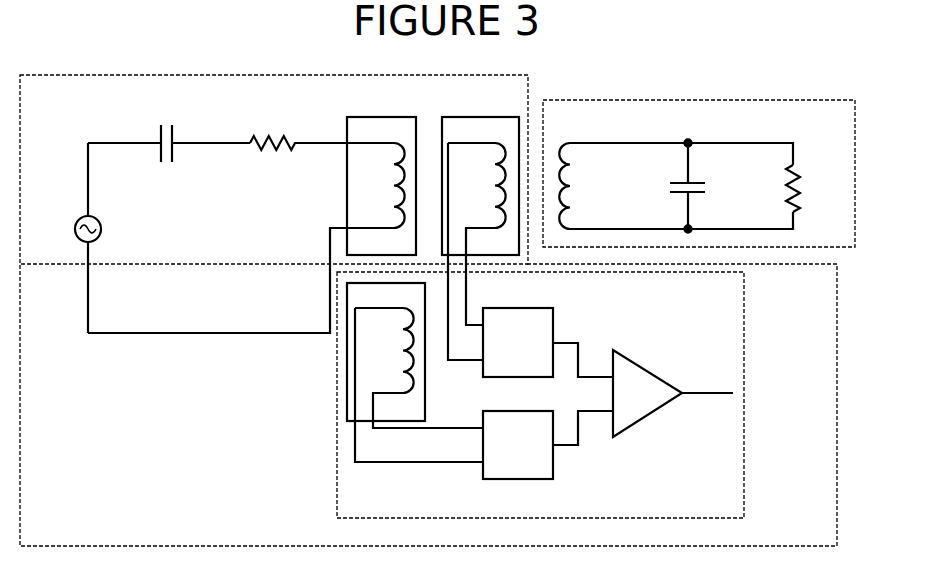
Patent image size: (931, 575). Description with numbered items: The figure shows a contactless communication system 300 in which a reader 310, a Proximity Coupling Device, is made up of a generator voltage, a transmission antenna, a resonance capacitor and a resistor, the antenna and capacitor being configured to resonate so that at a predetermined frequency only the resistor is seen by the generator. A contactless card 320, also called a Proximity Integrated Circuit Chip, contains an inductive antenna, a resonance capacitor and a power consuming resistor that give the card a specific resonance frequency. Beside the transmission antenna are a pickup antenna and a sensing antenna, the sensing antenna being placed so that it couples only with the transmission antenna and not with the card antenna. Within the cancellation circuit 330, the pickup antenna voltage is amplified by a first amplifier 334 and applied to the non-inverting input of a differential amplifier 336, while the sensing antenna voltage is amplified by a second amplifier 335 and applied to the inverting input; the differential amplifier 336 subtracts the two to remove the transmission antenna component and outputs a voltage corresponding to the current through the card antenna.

The contactless communication system 300 is at (767, 62).
The reader 310 is at (510, 75).
The contactless card 320 is at (783, 100).
The cancellation circuit 330 is at (581, 395).
The first amplifier 334 is at (517, 308).
The second amplifier 335 is at (523, 479).
The differential amplifier 336 is at (642, 368).